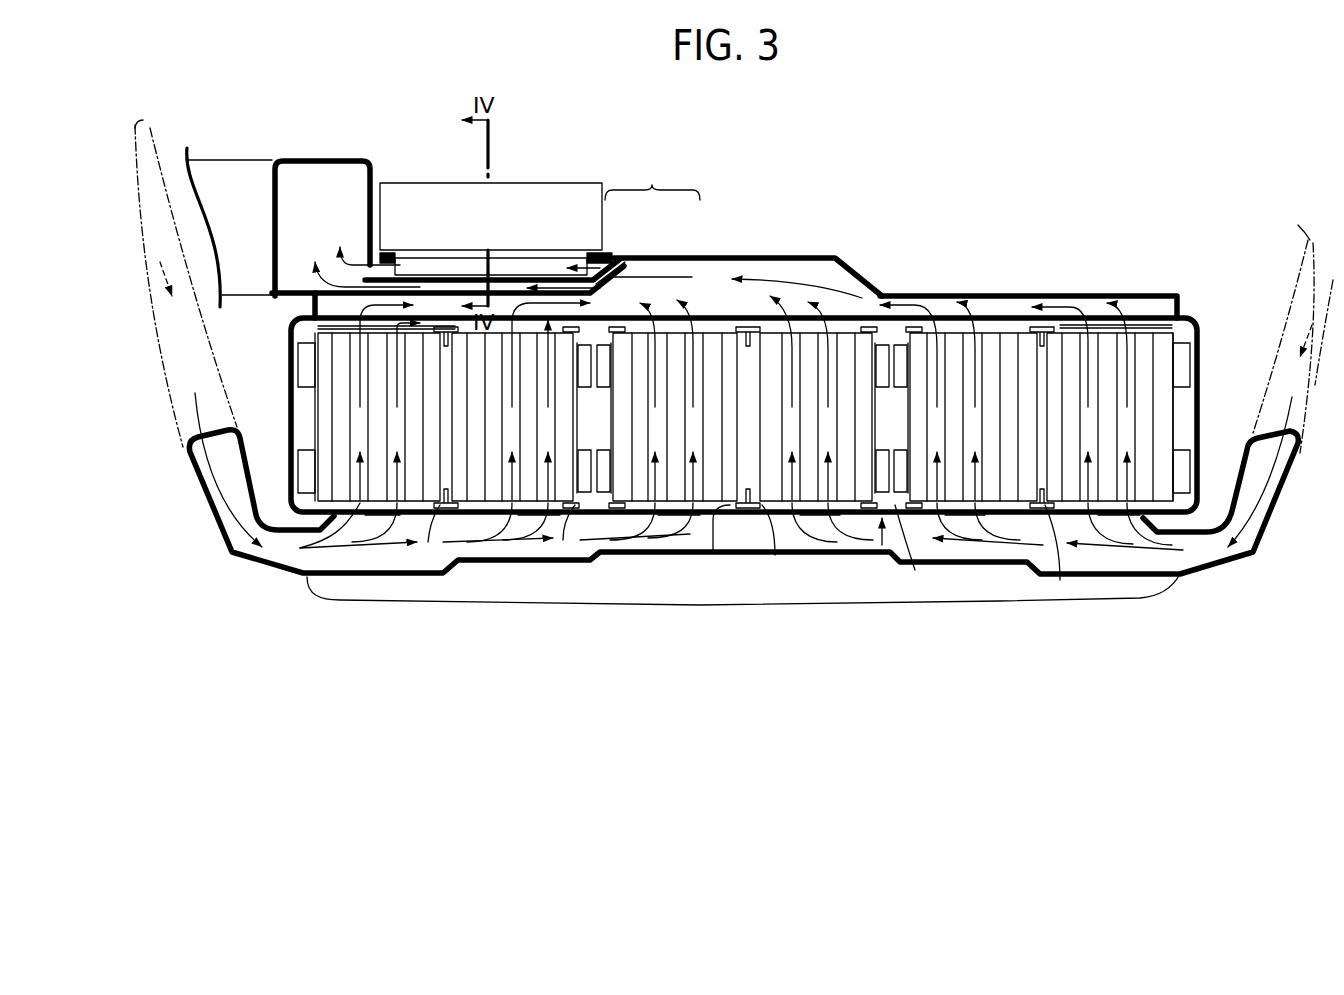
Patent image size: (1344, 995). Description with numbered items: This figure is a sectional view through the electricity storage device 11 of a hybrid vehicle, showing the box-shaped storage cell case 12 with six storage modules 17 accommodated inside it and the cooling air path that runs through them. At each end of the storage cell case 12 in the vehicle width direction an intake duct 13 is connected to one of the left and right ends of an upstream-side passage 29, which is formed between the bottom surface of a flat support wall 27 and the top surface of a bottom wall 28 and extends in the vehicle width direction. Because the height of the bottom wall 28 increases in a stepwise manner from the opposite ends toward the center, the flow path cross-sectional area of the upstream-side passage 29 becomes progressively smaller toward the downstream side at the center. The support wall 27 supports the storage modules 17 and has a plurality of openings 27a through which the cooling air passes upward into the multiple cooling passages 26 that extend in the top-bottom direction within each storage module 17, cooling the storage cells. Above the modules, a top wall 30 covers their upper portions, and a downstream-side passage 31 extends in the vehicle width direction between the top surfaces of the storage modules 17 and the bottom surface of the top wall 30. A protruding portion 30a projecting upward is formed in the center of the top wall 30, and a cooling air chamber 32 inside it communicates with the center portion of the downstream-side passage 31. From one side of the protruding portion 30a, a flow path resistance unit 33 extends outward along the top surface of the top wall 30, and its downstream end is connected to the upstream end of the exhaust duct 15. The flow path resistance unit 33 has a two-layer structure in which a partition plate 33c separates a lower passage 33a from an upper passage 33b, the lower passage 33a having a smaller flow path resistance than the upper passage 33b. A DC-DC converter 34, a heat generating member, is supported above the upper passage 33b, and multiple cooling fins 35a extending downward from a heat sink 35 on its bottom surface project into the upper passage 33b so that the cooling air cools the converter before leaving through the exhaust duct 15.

The electricity storage device 11 is at (984, 216).
The storage cell case 12 is at (1066, 281).
The intake duct 13 is at (200, 513).
The exhaust duct 15 is at (314, 159).
The storage module 17 is at (360, 503).
The cooling passage 26 is at (367, 503).
The support wall 27 is at (880, 548).
The opening 27a is at (428, 542).
The bottom wall 28 is at (635, 560).
The upstream-side passage 29 is at (693, 543).
The top wall 30 is at (915, 287).
The protruding portion 30a is at (778, 253).
The downstream-side passage 31 is at (443, 320).
The cooling air chamber 32 is at (715, 293).
The flow path resistance unit 33 is at (652, 181).
The lower passage 33a is at (687, 280).
The upper passage 33b is at (607, 272).
The partition plate 33c is at (462, 276).
The DC-DC converter 34 is at (525, 203).
The heat sink 35 is at (402, 244).
The cooling fin 35a is at (530, 267).